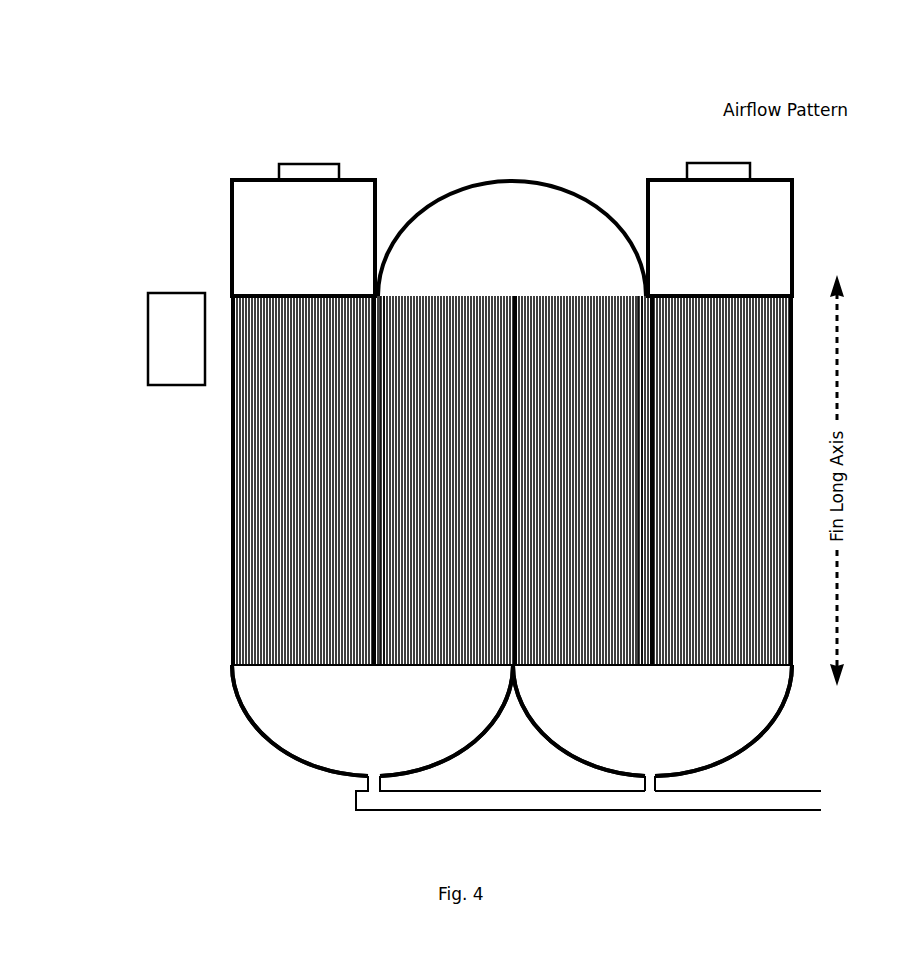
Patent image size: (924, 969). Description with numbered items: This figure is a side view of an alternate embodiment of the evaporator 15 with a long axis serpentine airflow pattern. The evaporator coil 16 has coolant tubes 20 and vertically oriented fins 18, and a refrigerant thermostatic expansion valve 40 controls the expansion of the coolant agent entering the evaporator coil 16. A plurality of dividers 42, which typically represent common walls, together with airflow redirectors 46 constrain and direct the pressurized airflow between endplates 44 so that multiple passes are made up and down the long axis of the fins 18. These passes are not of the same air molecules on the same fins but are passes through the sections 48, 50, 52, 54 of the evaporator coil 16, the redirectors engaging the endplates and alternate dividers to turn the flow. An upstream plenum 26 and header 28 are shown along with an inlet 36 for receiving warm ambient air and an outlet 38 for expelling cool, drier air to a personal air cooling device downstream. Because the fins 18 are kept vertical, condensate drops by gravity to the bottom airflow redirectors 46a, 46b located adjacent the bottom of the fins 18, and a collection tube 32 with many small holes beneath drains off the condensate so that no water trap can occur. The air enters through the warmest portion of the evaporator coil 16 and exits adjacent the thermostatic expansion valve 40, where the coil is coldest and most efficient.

The heat exchanger 15 is at (566, 88).
The evaporator coil 16 is at (243, 446).
The fins 18 is at (257, 660).
The coolant tubes 20 is at (794, 336).
The upstream plenum 26 is at (720, 238).
The first header 28 is at (303, 238).
The collection tube 32 is at (818, 786).
The inlet 36 is at (749, 155).
The outlet 38 is at (336, 158).
The thermostatic expansion valve 40 is at (138, 332).
The dividers 42 is at (623, 172).
The endplates 44 is at (222, 186).
The airflow redirectors 46 is at (572, 200).
The airflow redirector 46a is at (255, 735).
The airflow redirector 46b is at (556, 748).
The section of the evaporator coil 48 is at (657, 287).
The section of the evaporator coil 50 is at (624, 287).
The section of the evaporator coil 52 is at (387, 287).
The section of the evaporator coil 54 is at (343, 287).